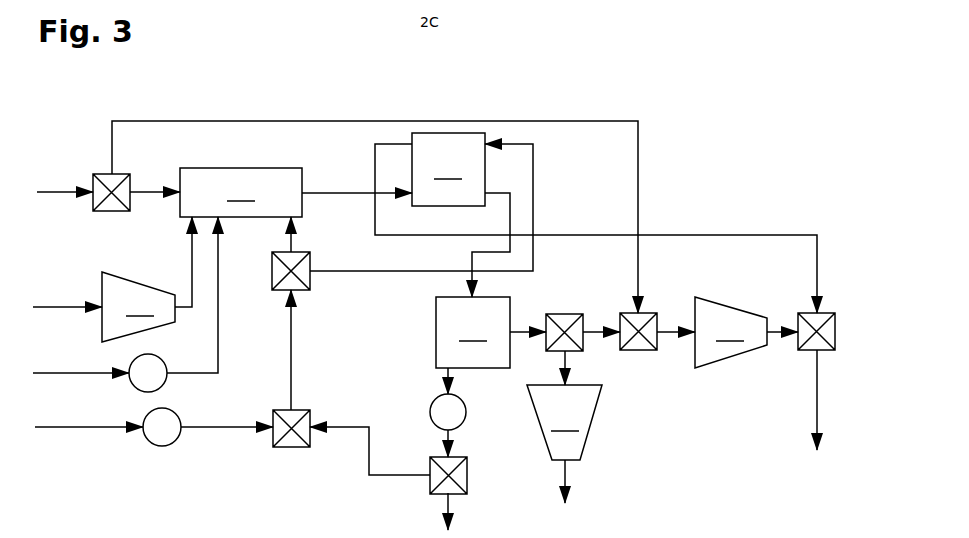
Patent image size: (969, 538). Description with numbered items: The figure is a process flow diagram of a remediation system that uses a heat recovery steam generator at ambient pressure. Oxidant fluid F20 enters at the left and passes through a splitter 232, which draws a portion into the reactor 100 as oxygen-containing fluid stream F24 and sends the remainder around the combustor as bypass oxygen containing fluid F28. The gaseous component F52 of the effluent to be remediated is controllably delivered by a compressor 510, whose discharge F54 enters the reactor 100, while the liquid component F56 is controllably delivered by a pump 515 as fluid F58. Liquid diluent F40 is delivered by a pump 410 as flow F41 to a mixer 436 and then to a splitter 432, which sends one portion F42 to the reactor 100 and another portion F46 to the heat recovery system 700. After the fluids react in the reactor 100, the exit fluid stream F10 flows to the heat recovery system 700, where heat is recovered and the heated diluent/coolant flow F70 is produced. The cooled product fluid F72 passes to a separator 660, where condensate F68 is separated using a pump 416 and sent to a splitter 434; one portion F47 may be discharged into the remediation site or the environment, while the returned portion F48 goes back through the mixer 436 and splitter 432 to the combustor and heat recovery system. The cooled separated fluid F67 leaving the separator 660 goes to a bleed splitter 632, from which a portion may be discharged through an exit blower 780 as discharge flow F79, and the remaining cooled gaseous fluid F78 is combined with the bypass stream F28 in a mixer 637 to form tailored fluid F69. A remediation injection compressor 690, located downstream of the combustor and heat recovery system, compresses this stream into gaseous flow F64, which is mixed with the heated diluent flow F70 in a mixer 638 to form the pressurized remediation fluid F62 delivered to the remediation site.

The reactor 100 is at (241, 192).
The splitter 232 is at (93, 176).
The heat recovery steam generator 700 is at (448, 169).
The compressor 510 is at (138, 307).
The pump 515 is at (150, 355).
The pump 410 is at (162, 447).
The splitter 432 is at (311, 291).
The mixer 436 is at (273, 408).
The separator 660 is at (473, 332).
The pump 416 is at (431, 413).
The splitter 434 is at (468, 475).
The bleed splitter 632 is at (562, 315).
The exit blower 780 is at (564, 422).
The mixer 637 is at (638, 352).
The remediation injection compressor 690 is at (731, 332).
The mixer 638 is at (797, 350).
The oxidant fluid F20 is at (62, 193).
The oxygen-containing fluid stream F24 is at (155, 187).
The bypass oxygen containing fluid F28 is at (213, 121).
The exit fluid stream F10 is at (337, 188).
The diluent portion to reactor F42 is at (287, 233).
The diluent portion to heat recovery system F46 is at (347, 257).
The cooled product fluid F72 is at (508, 227).
The heated diluent/coolant flow F70 is at (715, 235).
The gaseous component of effluent fluid F52 is at (67, 305).
The compressed gaseous effluent F54 is at (190, 264).
The liquid component of effluent fluid F56 is at (67, 370).
The pumped liquid effluent fluid F58 is at (220, 312).
The liquid diluent F40 is at (77, 428).
The pumped liquid diluent F41 is at (208, 430).
The returned condensate F48 is at (346, 430).
The condensate F68 is at (452, 382).
The condensate discharge portion F47 is at (450, 514).
The cooled separated fluid F67 is at (530, 335).
The cooled gaseous fluid F78 is at (600, 328).
The discharge flow F79 is at (567, 480).
The tailored fluid F69 is at (677, 328).
The compressed gaseous flow F64 is at (782, 327).
The pressurized remediation fluid F62 is at (813, 415).